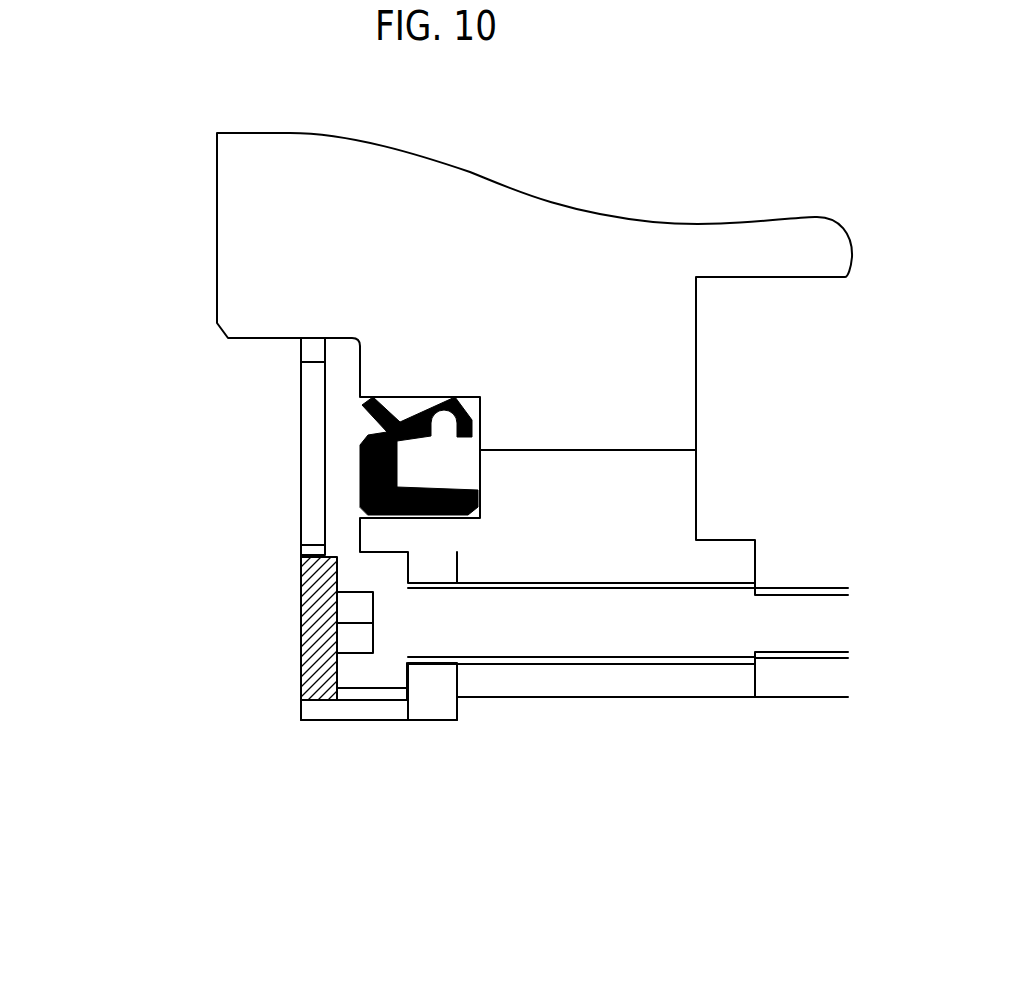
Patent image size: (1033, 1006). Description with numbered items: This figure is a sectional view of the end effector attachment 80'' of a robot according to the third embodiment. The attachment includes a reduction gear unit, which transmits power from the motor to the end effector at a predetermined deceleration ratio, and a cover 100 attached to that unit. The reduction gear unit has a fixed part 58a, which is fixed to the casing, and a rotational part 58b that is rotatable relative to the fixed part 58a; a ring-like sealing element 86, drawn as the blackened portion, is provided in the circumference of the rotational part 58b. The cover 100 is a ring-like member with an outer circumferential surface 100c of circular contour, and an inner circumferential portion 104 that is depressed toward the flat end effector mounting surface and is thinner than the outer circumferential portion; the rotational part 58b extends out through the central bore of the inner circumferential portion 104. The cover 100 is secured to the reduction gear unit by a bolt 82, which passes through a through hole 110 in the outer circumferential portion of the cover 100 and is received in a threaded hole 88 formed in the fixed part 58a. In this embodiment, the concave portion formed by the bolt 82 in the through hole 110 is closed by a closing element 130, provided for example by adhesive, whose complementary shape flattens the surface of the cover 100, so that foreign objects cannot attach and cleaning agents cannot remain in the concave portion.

The rotational part 58b is at (217, 253).
The fixed part 58a is at (645, 557).
The inner circumferential portion 104 is at (307, 417).
The sealing element 86 is at (362, 482).
The cover 100 is at (300, 522).
The outer circumferential surface 100c is at (372, 720).
The closing element 130 is at (300, 640).
The through hole 110 is at (402, 700).
The threaded hole 88 is at (502, 667).
The bolt 82 is at (560, 635).
The end effector attachment 80'' is at (143, 741).